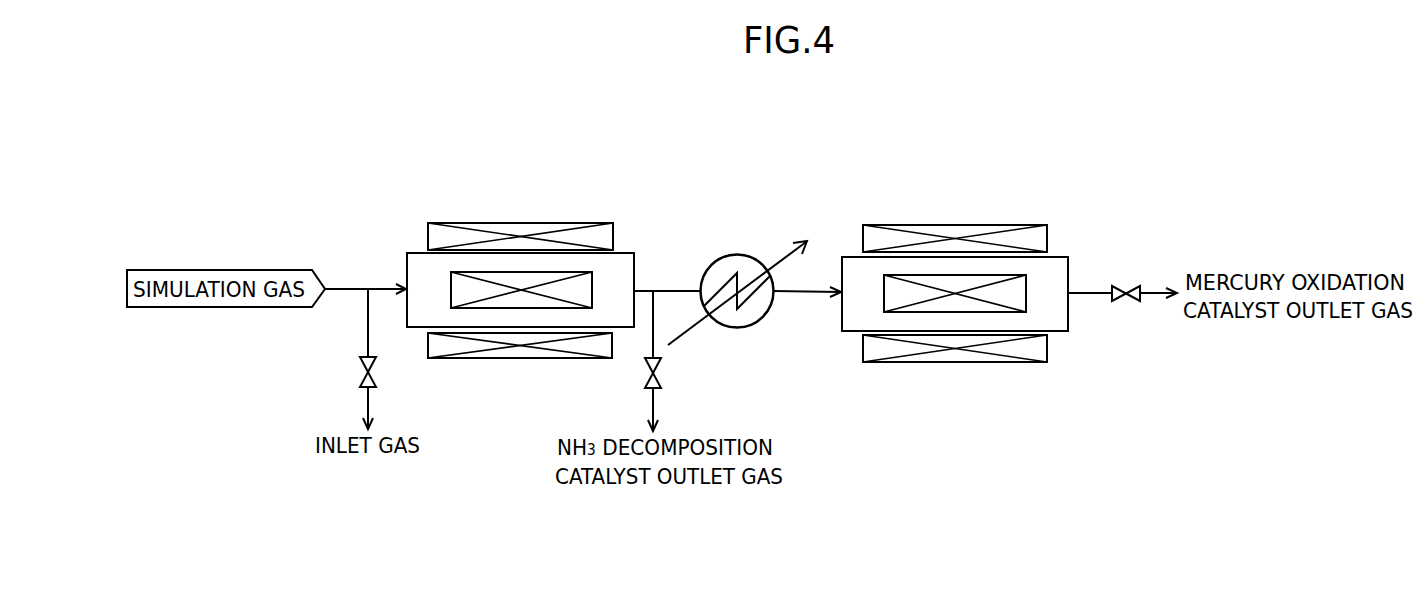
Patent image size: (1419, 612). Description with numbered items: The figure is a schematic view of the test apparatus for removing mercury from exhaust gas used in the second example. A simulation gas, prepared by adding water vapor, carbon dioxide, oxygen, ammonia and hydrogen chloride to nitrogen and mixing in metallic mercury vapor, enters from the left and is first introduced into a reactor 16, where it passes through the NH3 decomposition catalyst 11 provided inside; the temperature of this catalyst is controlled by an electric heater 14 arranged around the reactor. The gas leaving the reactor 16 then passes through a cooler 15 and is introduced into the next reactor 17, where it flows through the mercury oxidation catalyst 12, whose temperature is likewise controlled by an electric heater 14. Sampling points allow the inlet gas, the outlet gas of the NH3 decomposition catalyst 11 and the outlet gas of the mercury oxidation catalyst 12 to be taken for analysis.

The NH3 decomposition catalyst 11 is at (503, 300).
The mercury oxidation catalyst 12 is at (937, 302).
The electric heater 14 is at (523, 232).
The cooler 15 is at (737, 328).
The reactor 16 is at (420, 267).
The reactor 17 is at (1068, 320).